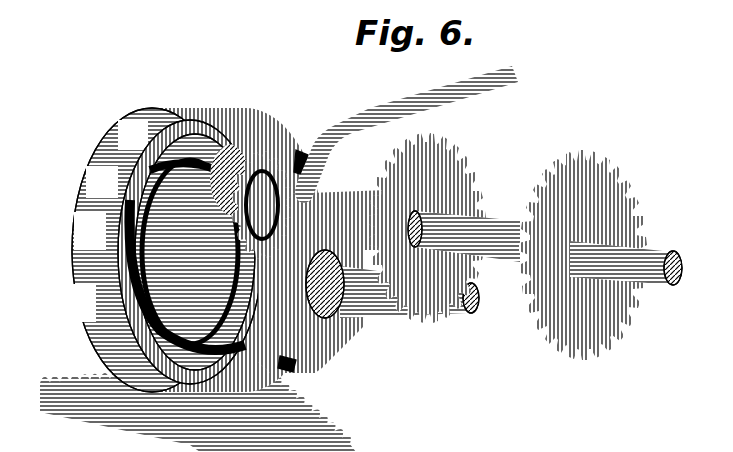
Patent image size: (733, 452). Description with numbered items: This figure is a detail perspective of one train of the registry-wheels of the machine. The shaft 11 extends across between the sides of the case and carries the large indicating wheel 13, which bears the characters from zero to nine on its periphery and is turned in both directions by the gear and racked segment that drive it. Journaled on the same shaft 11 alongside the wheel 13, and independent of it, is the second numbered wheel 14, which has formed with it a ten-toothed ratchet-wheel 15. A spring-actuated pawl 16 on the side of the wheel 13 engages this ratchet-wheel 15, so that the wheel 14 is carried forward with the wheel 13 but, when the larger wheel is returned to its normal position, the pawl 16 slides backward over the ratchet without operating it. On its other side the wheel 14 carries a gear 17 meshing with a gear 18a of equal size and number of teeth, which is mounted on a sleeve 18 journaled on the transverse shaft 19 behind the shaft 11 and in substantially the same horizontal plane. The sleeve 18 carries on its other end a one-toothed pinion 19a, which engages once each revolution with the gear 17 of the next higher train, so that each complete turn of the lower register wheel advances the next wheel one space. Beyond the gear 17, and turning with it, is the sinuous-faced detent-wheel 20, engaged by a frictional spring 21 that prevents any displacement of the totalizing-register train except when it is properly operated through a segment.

The shaft 11 is at (455, 318).
The numbered wheel 13 is at (160, 111).
The second numbered wheel 14 is at (268, 168).
The ten-toothed ratchet-wheel 15 is at (252, 144).
The spring-actuated pawl 16 is at (90, 351).
The gear 17 is at (302, 168).
The sleeve 18 is at (479, 217).
The gear 18a is at (617, 168).
The transverse shaft 19 is at (636, 291).
The one-toothed pinion 19a is at (470, 183).
The sinuous-faced detent-wheel 20 is at (320, 360).
The frictional spring 21 is at (482, 93).